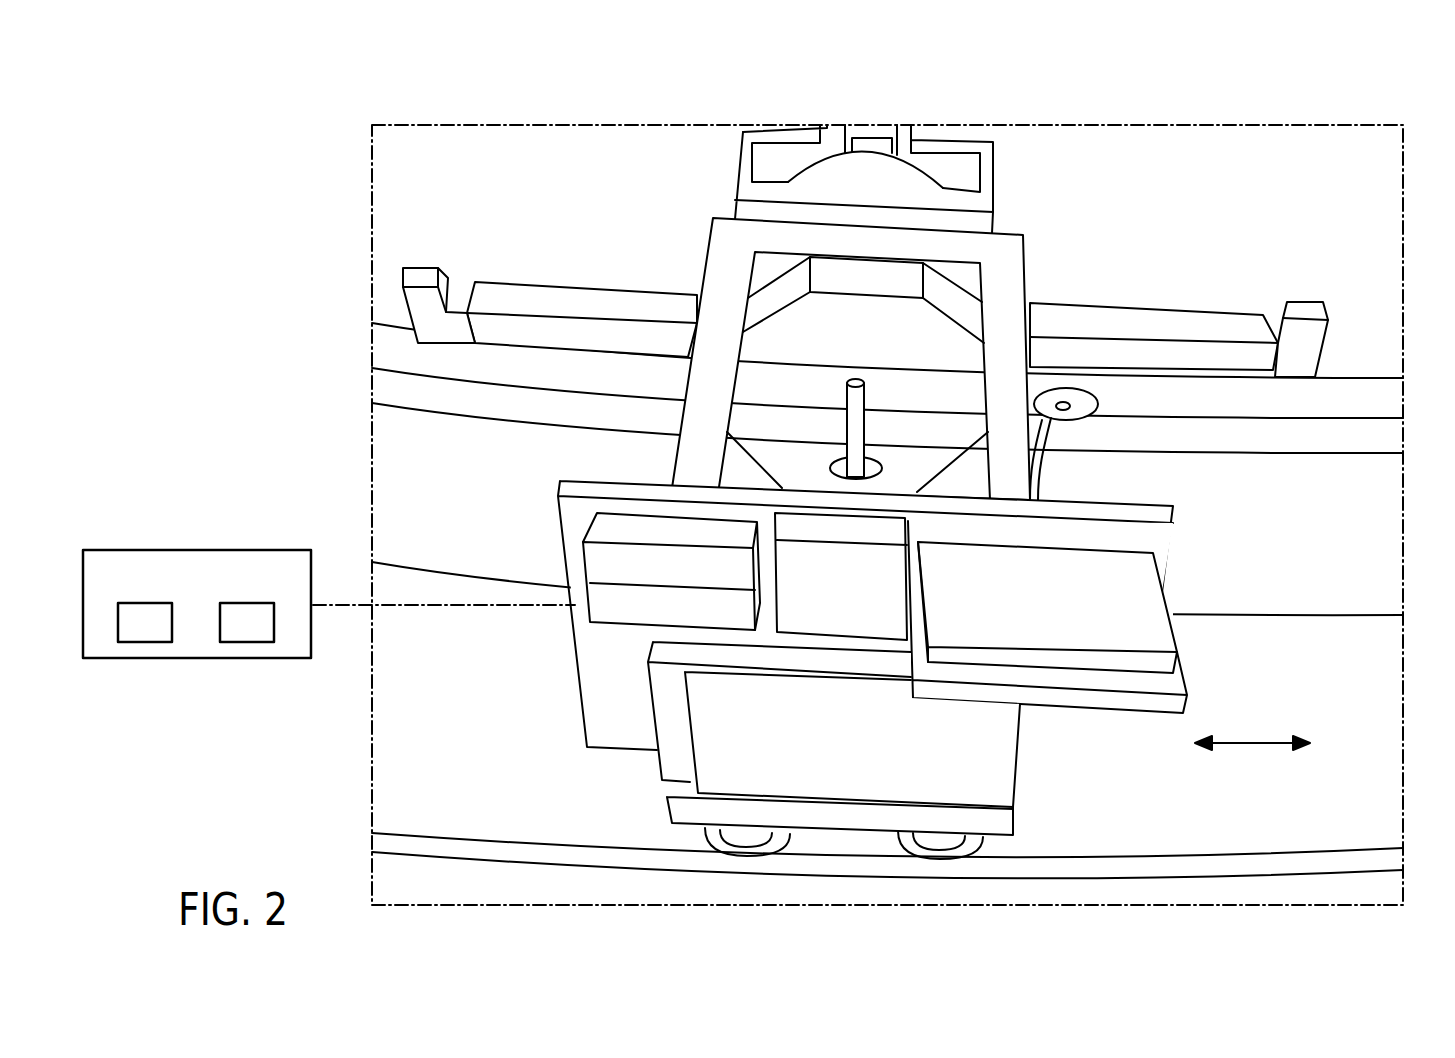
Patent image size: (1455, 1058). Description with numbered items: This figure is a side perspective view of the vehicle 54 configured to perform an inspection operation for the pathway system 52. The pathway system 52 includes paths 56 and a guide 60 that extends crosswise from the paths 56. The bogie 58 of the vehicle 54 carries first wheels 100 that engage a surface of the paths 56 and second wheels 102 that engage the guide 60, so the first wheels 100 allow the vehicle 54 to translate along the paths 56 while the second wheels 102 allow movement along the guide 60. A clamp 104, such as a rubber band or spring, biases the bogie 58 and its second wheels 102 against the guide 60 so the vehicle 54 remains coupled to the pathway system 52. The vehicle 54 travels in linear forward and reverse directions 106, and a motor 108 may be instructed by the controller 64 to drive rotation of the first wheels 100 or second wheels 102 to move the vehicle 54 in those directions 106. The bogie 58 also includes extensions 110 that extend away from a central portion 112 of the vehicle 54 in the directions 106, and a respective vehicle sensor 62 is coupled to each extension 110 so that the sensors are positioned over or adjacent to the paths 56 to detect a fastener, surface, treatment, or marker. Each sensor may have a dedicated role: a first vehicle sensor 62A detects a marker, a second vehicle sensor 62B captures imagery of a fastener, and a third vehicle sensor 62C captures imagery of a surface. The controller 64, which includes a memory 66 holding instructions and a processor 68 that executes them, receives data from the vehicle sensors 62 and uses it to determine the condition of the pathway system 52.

The pathway system 52 is at (1404, 418).
The vehicle 54 is at (1411, 163).
The paths 56 is at (1367, 383).
The bogie 58 is at (1120, 255).
The guide 60 is at (1348, 443).
The vehicle sensor 62 is at (763, 275).
The first vehicle sensor 62A is at (763, 275).
The second vehicle sensor 62B is at (763, 275).
The third vehicle sensor 62C is at (418, 310).
The controller 64 is at (329, 620).
The memory 66 is at (145, 642).
The processor 68 is at (247, 642).
The first wheels 100 is at (710, 843).
The second wheels 102 is at (1090, 394).
The clamp 104 is at (1036, 465).
The directions 106 is at (1253, 745).
The motor 108 is at (838, 470).
The extensions 110 is at (505, 293).
The central portion 112 is at (995, 245).